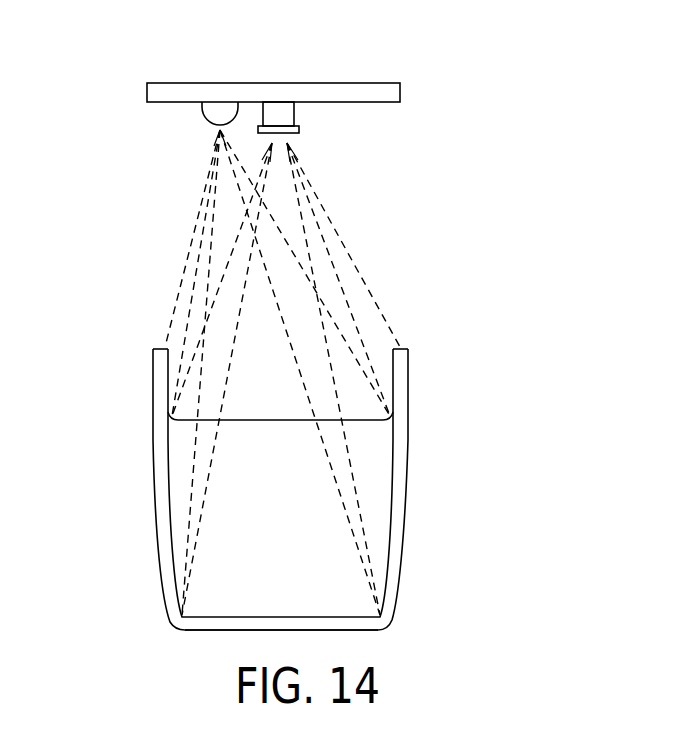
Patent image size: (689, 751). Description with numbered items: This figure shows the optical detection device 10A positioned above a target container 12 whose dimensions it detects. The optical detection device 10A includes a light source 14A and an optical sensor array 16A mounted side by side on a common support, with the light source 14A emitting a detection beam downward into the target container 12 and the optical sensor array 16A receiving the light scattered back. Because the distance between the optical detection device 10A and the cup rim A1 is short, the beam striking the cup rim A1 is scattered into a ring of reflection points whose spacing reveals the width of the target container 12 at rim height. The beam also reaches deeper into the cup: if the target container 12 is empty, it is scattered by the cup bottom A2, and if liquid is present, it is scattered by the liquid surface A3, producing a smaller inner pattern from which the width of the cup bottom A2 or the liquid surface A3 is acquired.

The optical detection device 10A is at (487, 98).
The light source 14A is at (222, 110).
The optical sensor array 16A is at (283, 116).
The target container 12 is at (158, 522).
The cup rim A1 is at (160, 348).
The liquid surface A3 is at (395, 422).
The cup bottom A2 is at (383, 628).